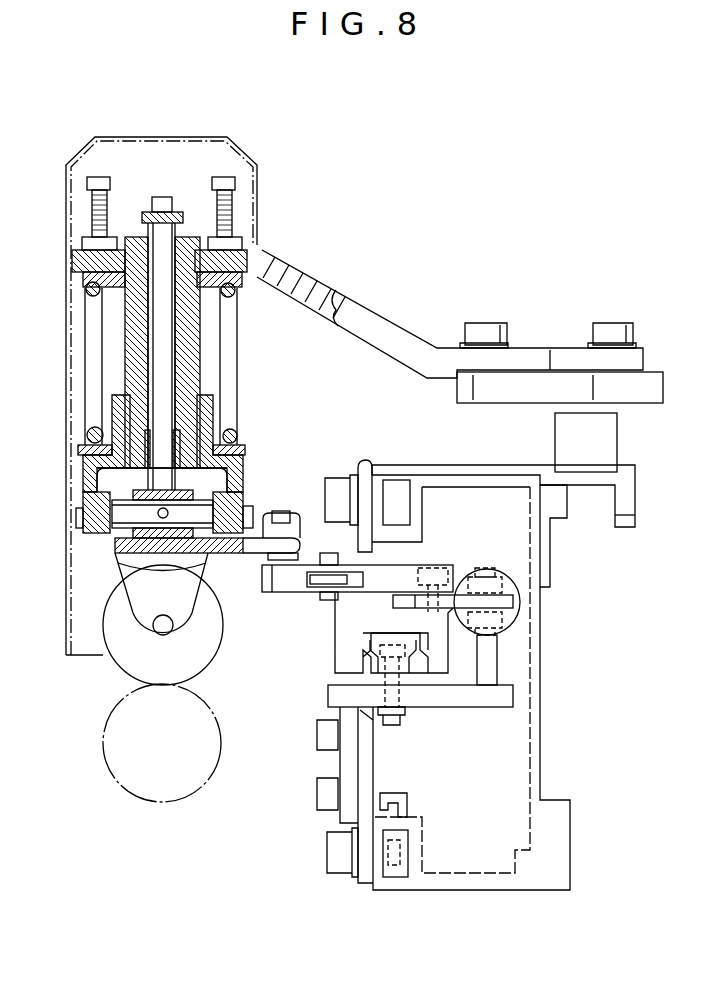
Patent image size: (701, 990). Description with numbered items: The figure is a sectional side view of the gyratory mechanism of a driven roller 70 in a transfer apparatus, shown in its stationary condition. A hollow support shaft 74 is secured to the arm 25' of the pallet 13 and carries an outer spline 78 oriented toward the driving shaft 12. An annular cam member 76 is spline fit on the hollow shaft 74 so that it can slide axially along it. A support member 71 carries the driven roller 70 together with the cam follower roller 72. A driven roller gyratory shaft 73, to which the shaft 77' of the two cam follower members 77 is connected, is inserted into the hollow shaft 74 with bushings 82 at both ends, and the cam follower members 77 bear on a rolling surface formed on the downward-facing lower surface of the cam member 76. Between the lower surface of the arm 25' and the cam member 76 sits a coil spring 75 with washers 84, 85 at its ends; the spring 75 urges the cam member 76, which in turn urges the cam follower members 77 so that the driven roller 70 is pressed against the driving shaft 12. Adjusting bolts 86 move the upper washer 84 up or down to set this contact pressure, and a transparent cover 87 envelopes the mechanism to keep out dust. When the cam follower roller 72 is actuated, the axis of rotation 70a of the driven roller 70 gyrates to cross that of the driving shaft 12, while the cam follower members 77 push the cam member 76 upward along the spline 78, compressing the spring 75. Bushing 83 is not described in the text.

The driving shaft 12 is at (103, 731).
The pallet 13 is at (515, 398).
The arm 25' is at (505, 321).
The driven roller 70 is at (125, 653).
The axis of rotation 70a is at (168, 625).
The support member 71 is at (115, 547).
The cam follower roller 72 is at (278, 585).
The driven roller gyratory shaft 73 is at (172, 360).
The hollow support shaft 74 is at (138, 315).
The coil spring 75 is at (87, 433).
The annular cam member 76 is at (98, 470).
The cam follower member 77 is at (163, 501).
The shaft of cam follower members 77' is at (256, 469).
The outer spline 78 is at (127, 378).
The bushing 82 is at (253, 258).
The bushing 83 is at (200, 448).
The upper washer 84 is at (73, 278).
The washer 85 is at (80, 449).
The adjusting bolt 86 is at (88, 180).
The transparent cover 87 is at (243, 150).